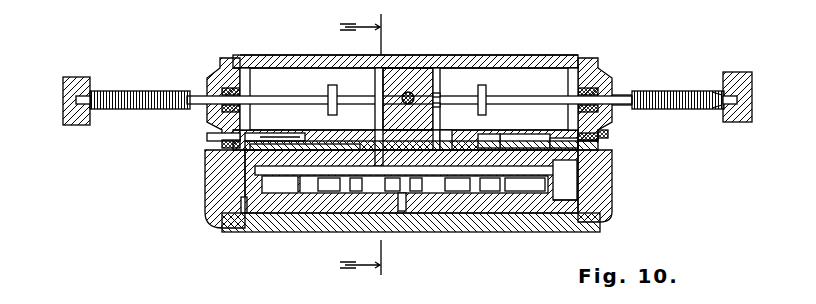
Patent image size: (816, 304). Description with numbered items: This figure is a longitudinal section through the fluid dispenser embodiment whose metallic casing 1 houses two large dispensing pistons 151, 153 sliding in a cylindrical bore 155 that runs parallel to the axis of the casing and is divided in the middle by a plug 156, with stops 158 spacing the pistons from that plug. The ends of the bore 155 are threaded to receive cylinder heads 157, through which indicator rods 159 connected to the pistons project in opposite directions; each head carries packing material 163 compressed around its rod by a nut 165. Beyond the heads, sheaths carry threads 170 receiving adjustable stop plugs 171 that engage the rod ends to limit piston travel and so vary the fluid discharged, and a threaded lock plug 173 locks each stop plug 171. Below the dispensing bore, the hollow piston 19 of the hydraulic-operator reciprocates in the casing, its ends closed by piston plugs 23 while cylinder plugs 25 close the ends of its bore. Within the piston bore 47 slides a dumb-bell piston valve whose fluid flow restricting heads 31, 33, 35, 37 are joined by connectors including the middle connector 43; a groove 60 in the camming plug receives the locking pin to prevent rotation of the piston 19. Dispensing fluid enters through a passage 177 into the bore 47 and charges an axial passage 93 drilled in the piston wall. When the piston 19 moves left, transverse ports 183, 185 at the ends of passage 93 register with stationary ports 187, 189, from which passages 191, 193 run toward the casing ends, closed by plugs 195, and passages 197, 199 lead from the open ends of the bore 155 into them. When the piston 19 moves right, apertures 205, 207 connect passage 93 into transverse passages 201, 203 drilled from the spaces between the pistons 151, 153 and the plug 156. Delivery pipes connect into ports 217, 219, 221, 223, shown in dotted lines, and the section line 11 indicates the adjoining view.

The casing 1 is at (568, 62).
The section line 11- 11 is at (362, 146).
The hollow piston 19 is at (268, 218).
The piston plug 23 is at (240, 180).
The cylinder plug 25 is at (205, 190).
The fluid flow restricting head 31 is at (338, 190).
The fluid flow restricting head 33 is at (366, 215).
The fluid flow restricting head 35 is at (442, 182).
The fluid flow restricting head 37 is at (512, 210).
The middle connector 43 is at (398, 213).
The bore 47 is at (590, 200).
The groove 60 is at (430, 213).
The passage 93 is at (300, 205).
The dispensing piston 151 is at (345, 80).
The dispensing piston 153 is at (455, 70).
The cylindrical bore 155 is at (270, 62).
The plug 156 is at (380, 148).
The cylinder head 157 is at (206, 72).
The stop 158 is at (375, 99).
The indicator rod 159 is at (264, 104).
The packing material 163 is at (620, 86).
The nut 165 is at (232, 86).
The threads 170 is at (698, 90).
The stop plug 171 is at (718, 120).
The lock plug 173 is at (63, 100).
The passage 177 is at (492, 192).
The transverse port 183 is at (207, 168).
The transverse port 185 is at (598, 147).
The stationary port 187 is at (207, 150).
The stationary port 189 is at (600, 138).
The passage 191 is at (282, 146).
The passage 193 is at (532, 140).
The plug 195 is at (212, 140).
The passage 197 is at (250, 126).
The passage 199 is at (572, 142).
The transverse passage 201 is at (413, 150).
The transverse passage 203 is at (441, 135).
The aperture 205 is at (353, 150).
The aperture 207 is at (450, 68).
The port 217 is at (212, 222).
The port 219 is at (345, 225).
The port 221 is at (482, 135).
The port 223 is at (545, 225).